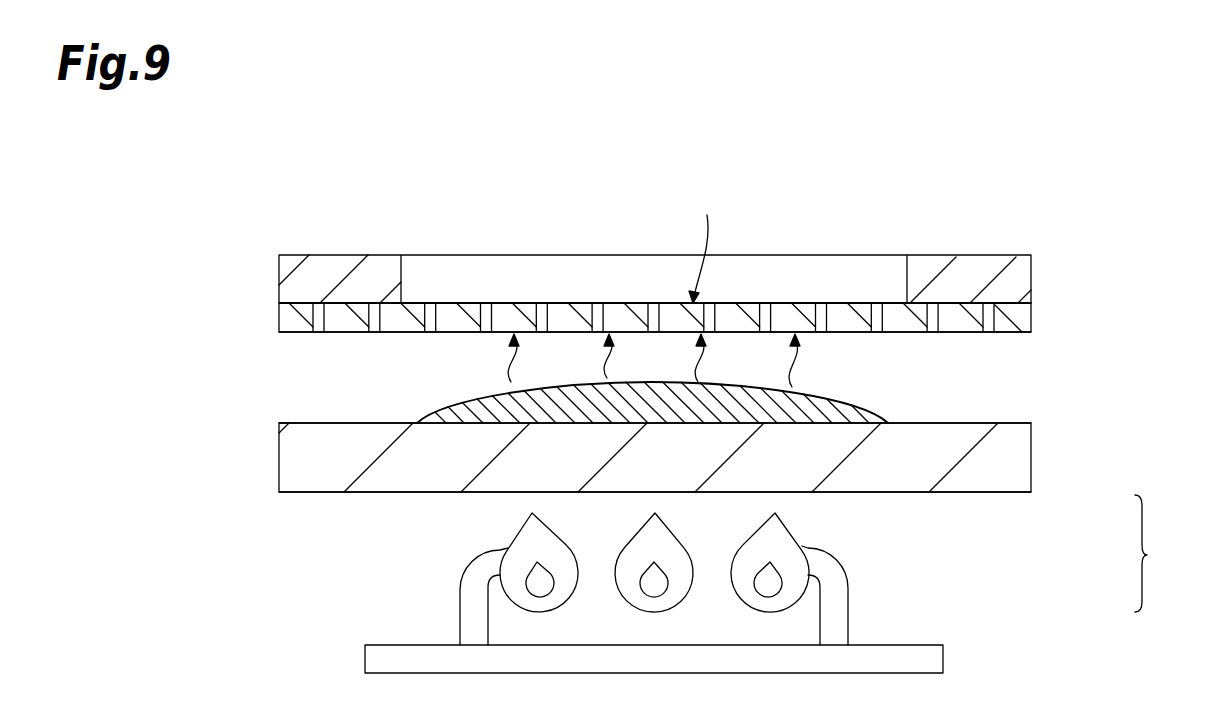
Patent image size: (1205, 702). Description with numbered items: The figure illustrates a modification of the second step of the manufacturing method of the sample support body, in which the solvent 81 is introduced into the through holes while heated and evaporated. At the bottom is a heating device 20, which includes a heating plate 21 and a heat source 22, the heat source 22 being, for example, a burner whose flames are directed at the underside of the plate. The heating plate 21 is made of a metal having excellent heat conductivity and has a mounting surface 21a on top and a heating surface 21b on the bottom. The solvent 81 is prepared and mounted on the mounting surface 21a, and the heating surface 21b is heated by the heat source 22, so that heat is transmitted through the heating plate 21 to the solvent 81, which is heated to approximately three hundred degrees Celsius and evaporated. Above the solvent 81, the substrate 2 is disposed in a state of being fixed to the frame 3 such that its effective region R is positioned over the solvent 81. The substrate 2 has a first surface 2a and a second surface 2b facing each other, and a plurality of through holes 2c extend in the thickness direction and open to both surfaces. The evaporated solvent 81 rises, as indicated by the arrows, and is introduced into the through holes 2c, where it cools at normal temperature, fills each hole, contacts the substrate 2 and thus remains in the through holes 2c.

The substrate 2 is at (1018, 320).
The first surface 2a is at (1020, 293).
The second surface 2b is at (1003, 333).
The through holes 2c is at (430, 312).
The frame 3 is at (1017, 270).
The effective region R is at (703, 245).
The solvent 81 is at (865, 403).
The heating device 20 is at (1160, 553).
The heating plate 21 is at (1031, 472).
The mounting surface 21a is at (973, 423).
The heating surface 21b is at (977, 493).
The heat source 22 is at (945, 657).